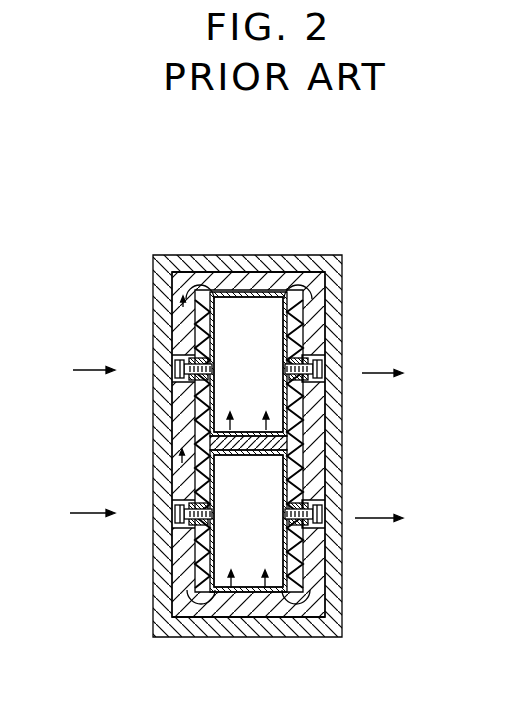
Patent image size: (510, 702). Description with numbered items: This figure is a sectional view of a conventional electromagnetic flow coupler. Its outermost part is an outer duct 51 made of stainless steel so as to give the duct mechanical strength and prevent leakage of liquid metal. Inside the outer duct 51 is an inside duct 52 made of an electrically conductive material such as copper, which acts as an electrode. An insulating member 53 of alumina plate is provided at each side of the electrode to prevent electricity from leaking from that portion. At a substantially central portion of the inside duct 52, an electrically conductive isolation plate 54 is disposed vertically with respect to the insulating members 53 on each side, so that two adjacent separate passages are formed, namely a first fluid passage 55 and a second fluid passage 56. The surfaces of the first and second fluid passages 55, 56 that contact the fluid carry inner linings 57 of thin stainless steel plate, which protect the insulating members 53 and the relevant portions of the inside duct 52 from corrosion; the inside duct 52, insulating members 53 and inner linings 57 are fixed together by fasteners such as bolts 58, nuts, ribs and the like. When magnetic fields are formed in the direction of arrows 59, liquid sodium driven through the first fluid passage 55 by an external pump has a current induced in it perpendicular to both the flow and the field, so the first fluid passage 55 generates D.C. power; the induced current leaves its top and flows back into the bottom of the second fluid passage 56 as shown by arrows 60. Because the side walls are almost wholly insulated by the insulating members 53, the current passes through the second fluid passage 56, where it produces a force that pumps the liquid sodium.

The outer duct 51 is at (165, 462).
The inside duct 52 is at (247, 270).
The insulating member 53 is at (200, 318).
The isolation plate 54 is at (266, 446).
The first fluid passage 55 is at (267, 357).
The second fluid passage 56 is at (267, 537).
The inner lining 57 is at (214, 368).
The bolt 58 is at (176, 364).
The arrows indicating magnetic field direction 59 is at (92, 370).
The arrows indicating induced current flow 60 is at (200, 285).